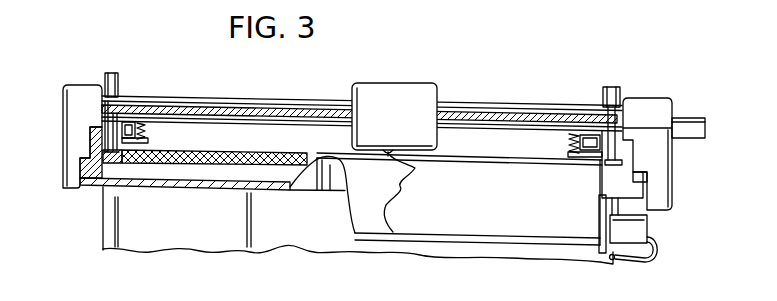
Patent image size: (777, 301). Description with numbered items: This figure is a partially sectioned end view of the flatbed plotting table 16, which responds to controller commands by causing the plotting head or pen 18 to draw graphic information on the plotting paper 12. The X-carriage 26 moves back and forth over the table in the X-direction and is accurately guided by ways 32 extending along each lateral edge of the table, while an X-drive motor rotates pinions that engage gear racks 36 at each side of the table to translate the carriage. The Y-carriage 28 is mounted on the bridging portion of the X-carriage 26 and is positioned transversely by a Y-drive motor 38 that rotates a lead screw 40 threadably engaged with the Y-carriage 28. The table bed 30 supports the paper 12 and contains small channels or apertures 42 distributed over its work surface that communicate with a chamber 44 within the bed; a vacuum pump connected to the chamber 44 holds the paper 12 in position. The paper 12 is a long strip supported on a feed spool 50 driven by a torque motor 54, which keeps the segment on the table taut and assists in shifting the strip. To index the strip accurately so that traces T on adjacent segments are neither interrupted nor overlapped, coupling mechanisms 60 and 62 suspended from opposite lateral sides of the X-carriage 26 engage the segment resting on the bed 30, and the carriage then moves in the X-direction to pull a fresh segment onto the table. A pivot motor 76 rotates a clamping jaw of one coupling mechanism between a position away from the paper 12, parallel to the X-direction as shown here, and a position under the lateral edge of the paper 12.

The flatbed plotting table 16 is at (79, 78).
The pivot motor 76 is at (122, 86).
The X-carriage 26 is at (478, 103).
The lead screw 40 is at (516, 118).
The coupling mechanism 60 is at (153, 136).
The coupling mechanism 62 is at (562, 150).
The channels or apertures 42 is at (237, 153).
The chamber 44 is at (178, 170).
The table bed 30 is at (328, 190).
The plotting paper 12 is at (483, 229).
The trace T is at (408, 180).
The Y-carriage 28 is at (357, 90).
The plotting head or pen 18 is at (382, 147).
The ways 32 is at (623, 152).
The Y-drive motor 38 is at (687, 118).
The gear racks 36 is at (647, 173).
The feed spool 50 is at (598, 240).
The torque motor 54 is at (640, 227).